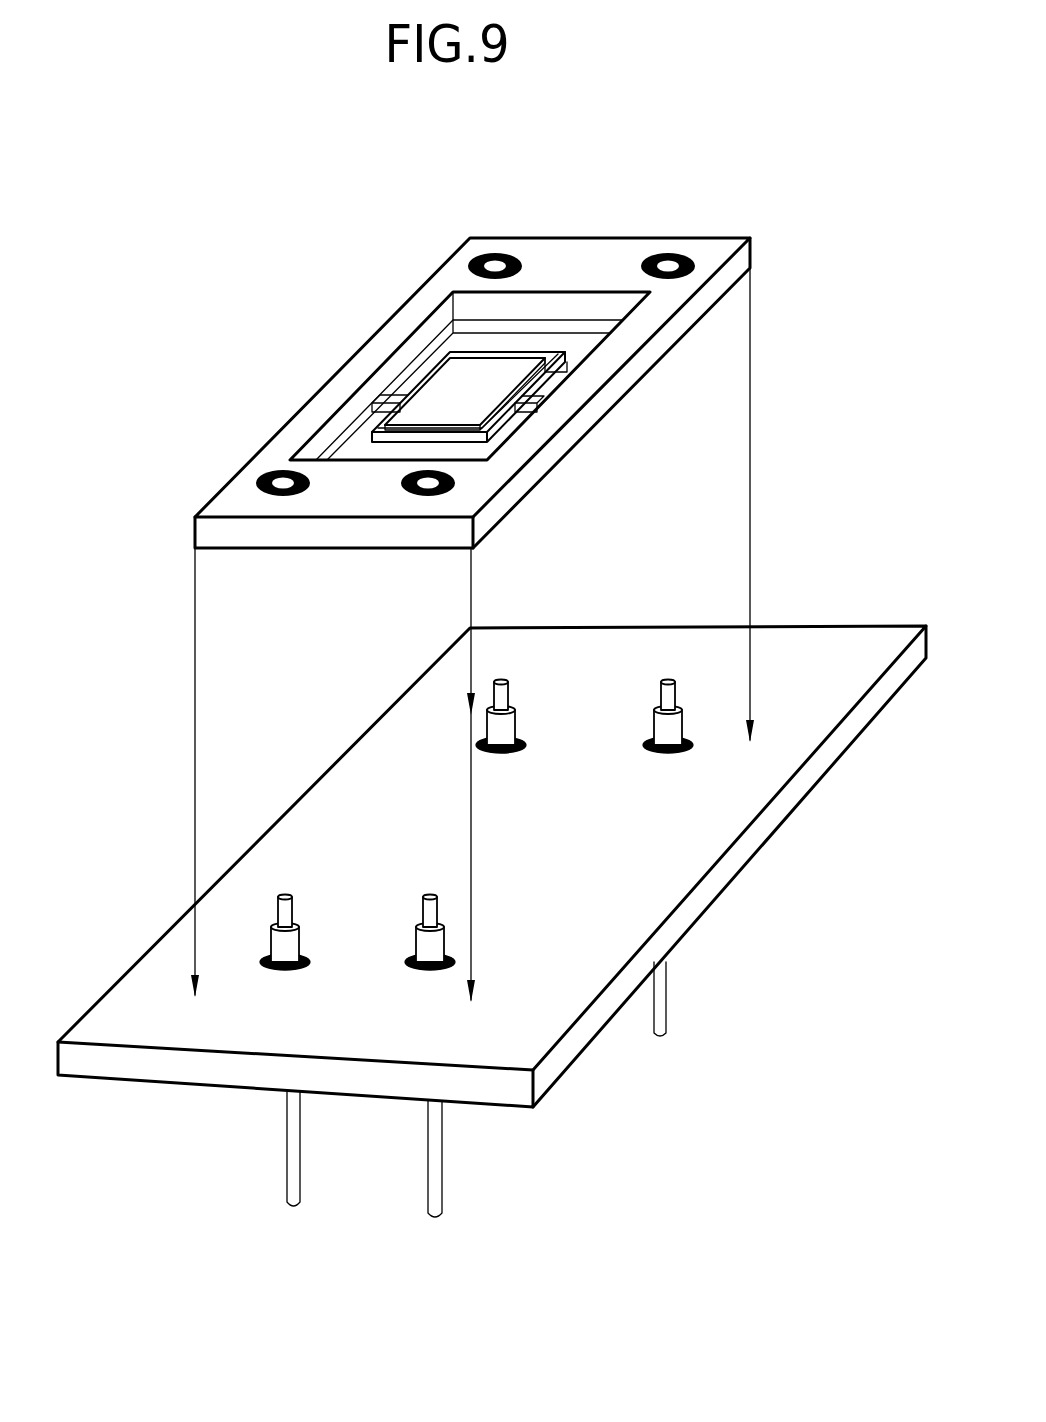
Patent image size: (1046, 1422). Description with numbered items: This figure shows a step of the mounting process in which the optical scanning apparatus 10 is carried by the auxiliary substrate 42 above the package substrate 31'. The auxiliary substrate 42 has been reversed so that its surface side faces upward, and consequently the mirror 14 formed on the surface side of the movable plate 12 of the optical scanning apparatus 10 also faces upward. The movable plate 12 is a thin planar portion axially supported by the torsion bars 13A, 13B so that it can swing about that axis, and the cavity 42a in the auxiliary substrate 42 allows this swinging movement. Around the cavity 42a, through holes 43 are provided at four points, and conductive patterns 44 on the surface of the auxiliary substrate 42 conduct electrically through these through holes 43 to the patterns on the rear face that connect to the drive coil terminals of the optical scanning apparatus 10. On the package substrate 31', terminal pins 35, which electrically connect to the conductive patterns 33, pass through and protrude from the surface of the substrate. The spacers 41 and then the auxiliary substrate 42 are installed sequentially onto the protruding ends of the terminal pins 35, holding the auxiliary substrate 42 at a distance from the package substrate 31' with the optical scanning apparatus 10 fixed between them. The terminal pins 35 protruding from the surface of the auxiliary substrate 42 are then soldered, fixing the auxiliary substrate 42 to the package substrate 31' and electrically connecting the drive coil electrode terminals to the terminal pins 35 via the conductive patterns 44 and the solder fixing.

The optical scanning apparatus 10 is at (532, 347).
The movable plate 12 is at (400, 437).
The torsion bar 13A is at (397, 387).
The torsion bar 13B is at (542, 387).
The mirror 14 is at (463, 387).
The package substrate 31' is at (492, 921).
The conductive pattern 33 is at (512, 752).
The terminal pin 35 is at (508, 692).
The spacer 41 is at (516, 730).
The auxiliary substrate 42 is at (367, 357).
The cavity 42a is at (437, 327).
The through hole 43 is at (490, 253).
The conductive pattern 44 is at (500, 252).